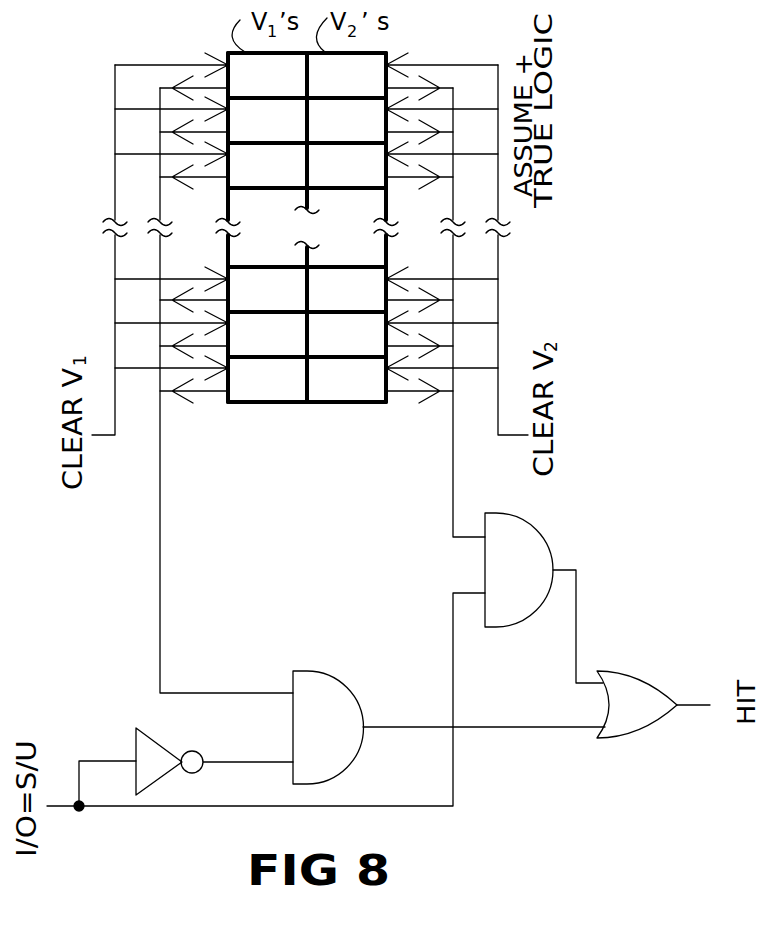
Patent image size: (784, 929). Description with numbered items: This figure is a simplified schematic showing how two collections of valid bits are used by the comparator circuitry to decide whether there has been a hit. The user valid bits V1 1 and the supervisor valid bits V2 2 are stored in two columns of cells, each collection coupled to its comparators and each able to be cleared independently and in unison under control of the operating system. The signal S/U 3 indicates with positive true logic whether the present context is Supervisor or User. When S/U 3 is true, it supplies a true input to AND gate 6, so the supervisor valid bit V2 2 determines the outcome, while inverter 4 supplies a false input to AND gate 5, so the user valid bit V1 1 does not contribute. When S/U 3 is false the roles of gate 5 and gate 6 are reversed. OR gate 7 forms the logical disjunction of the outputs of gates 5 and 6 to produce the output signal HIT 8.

The valid bit V1 1 is at (160, 538).
The valid bit V2 2 is at (452, 515).
The signal S/U 3 is at (56, 808).
The inverter 4 is at (147, 729).
The AND gate 5 is at (342, 679).
The AND gate 6 is at (545, 537).
The OR gate 7 is at (606, 670).
The signal HIT 8 is at (700, 706).